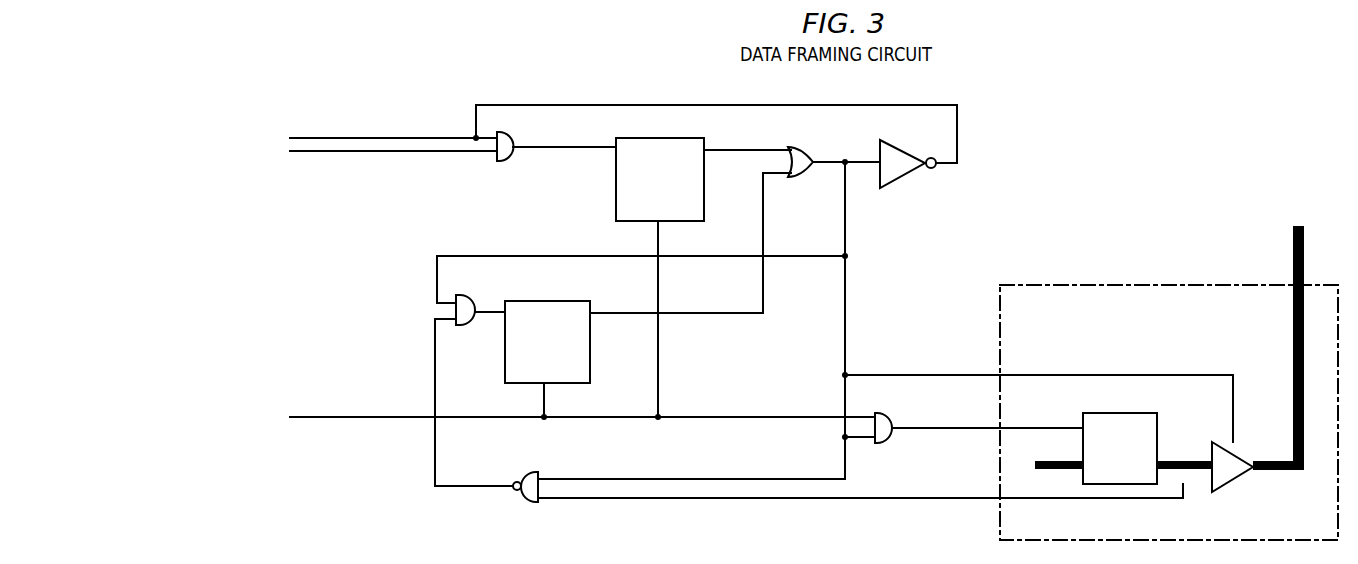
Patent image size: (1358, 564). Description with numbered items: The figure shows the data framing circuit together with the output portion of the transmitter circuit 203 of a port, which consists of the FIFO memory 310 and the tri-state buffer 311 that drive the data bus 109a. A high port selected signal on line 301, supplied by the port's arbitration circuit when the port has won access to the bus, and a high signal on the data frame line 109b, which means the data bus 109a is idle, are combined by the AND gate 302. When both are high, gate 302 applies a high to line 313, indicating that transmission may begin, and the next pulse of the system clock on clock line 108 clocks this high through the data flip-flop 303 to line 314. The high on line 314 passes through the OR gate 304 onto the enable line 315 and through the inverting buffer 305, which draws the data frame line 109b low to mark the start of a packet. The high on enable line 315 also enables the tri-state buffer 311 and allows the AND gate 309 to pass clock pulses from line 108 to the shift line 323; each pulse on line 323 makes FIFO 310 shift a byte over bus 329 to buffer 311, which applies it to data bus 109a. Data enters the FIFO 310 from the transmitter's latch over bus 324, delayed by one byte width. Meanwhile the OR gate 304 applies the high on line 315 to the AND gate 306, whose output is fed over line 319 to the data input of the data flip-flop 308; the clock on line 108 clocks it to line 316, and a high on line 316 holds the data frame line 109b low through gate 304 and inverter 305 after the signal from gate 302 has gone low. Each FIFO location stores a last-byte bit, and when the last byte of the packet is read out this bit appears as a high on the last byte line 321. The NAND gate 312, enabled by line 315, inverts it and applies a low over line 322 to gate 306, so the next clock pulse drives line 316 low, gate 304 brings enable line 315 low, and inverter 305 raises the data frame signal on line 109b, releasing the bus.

The data frame line 109b is at (623, 134).
The port selected signal line 301 is at (393, 163).
The AND gate 302 is at (506, 162).
The line 313 is at (558, 145).
The data flip-flop 303 is at (616, 200).
The line 314 is at (748, 145).
The OR gate 304 is at (800, 178).
The line 316 is at (764, 234).
The inverting buffer 305 is at (897, 148).
The enable line 315 is at (410, 270).
The AND gate 306 is at (463, 296).
The AND gate output line 319 is at (483, 314).
The data flip-flop 308 is at (591, 370).
The clock line 108 is at (386, 416).
The NAND gate 312 is at (526, 472).
The line 322 is at (445, 487).
The last byte line 321 is at (805, 499).
The AND gate 309 is at (888, 440).
The shift line 323 is at (987, 408).
The transmitter circuit 203 is at (1125, 284).
The data bus 109a is at (1292, 262).
The FIFO memory 310 is at (1130, 413).
The FIFO output bus 329 is at (1170, 462).
The bus 324 is at (1054, 470).
The tri-state buffer 311 is at (1235, 485).